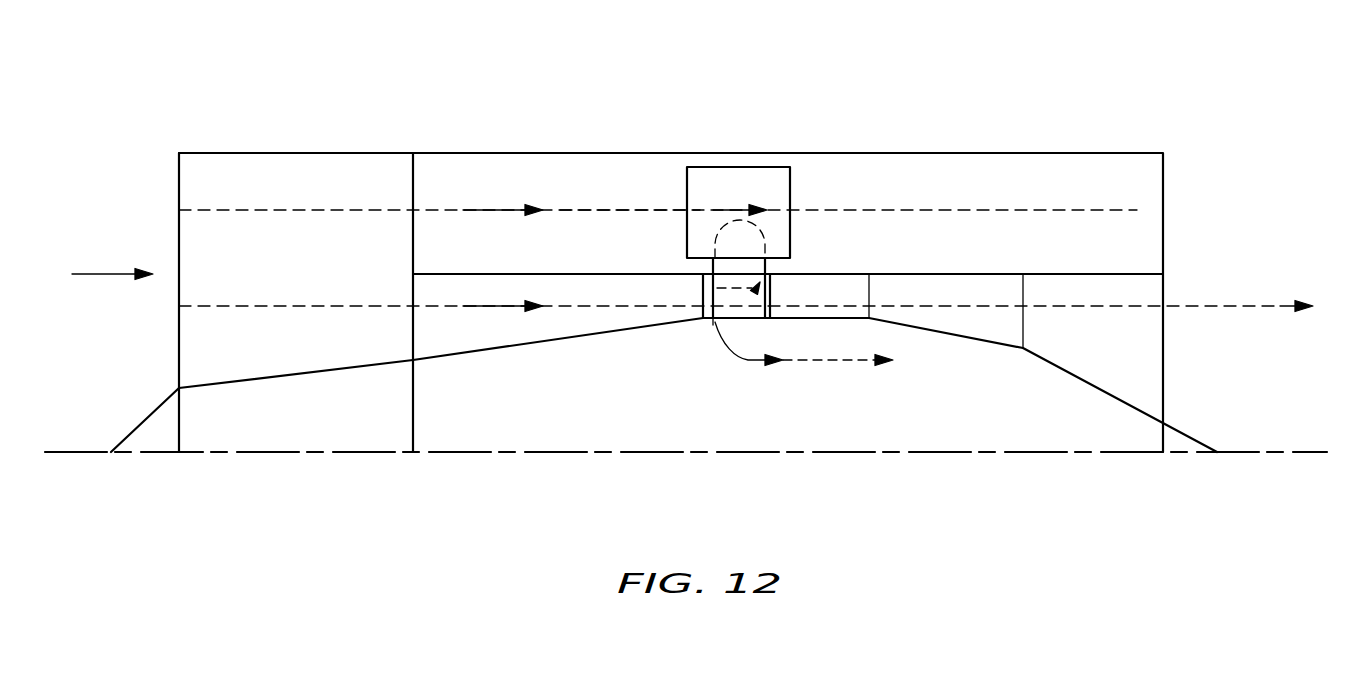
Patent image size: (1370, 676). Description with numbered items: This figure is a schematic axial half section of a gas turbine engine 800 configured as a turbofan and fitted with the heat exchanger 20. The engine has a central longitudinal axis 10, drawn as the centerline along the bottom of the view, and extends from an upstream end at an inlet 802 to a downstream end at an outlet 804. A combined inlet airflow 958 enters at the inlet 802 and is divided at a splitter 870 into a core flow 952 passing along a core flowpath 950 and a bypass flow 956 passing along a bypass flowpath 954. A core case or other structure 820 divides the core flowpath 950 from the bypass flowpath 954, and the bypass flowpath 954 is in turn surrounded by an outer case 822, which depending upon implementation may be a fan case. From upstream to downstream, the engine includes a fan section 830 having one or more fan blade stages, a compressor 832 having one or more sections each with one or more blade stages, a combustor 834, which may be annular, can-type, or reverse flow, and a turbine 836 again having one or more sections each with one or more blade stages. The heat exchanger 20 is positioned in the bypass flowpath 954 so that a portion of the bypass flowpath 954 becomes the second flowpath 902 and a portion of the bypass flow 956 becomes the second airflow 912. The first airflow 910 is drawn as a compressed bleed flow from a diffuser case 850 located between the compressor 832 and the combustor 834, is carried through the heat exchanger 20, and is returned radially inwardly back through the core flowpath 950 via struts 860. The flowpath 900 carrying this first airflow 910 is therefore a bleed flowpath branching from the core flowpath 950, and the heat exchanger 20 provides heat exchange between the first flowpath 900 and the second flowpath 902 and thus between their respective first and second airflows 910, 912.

The central longitudinal axis 10 is at (1302, 452).
The heat exchanger 20 is at (782, 179).
The gas turbine engine 800 is at (985, 73).
The inlet 802 is at (135, 360).
The outlet 804 is at (1244, 261).
The core case 820 is at (988, 274).
The outer case 822 is at (447, 153).
The fan section 830 is at (323, 195).
The compressor 832 is at (588, 332).
The combustor 834 is at (826, 332).
The turbine 836 is at (985, 332).
The diffuser case 850 is at (772, 288).
The struts 860 is at (703, 292).
The splitter 870 is at (400, 274).
The first flowpath 900 is at (715, 320).
The second flowpath 902 is at (698, 205).
The first airflow 910 is at (748, 360).
The second airflow 912 is at (730, 208).
The core flowpath 950 is at (441, 307).
The core flow 952 is at (497, 307).
The bypass flowpath 954 is at (575, 207).
The bypass flow 956 is at (492, 207).
The inlet airflow 958 is at (93, 274).